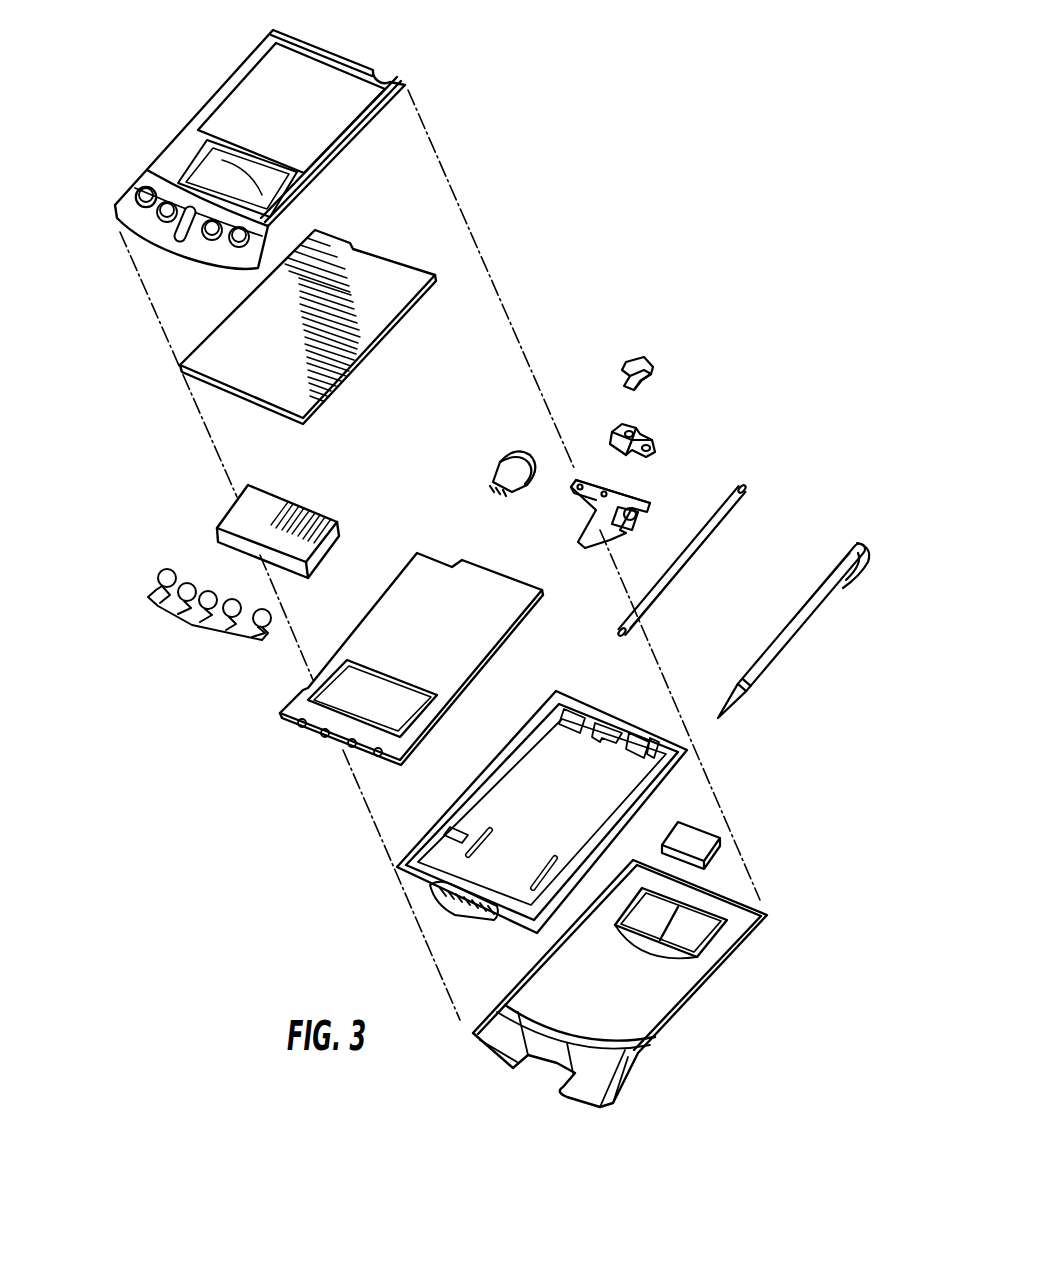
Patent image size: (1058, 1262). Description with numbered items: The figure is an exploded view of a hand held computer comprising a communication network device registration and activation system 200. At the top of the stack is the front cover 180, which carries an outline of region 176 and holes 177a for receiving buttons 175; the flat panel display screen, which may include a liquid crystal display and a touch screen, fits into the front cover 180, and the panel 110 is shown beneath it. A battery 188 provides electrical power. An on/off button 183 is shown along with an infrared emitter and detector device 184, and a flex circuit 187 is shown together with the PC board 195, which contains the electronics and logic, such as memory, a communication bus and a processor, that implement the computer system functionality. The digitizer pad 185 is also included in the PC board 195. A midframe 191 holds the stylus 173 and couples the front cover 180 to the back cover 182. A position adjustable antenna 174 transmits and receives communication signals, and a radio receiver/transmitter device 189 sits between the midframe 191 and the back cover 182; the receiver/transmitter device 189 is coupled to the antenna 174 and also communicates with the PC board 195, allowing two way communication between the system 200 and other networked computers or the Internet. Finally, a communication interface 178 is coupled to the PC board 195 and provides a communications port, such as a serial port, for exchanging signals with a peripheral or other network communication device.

The communication network device registration and activation system 200 is at (682, 97).
The front cover 180 is at (415, 88).
The region 176 is at (210, 177).
The holes 177a is at (149, 196).
The panel / touch overlay 110 is at (415, 262).
The digitizer pad 185 is at (214, 516).
The buttons 175 is at (153, 580).
The PC board 195 is at (297, 688).
The radio receiver/transmitter device 189 is at (508, 450).
The on/off button 183 is at (658, 359).
The infrared emitter and detector device 184 is at (653, 426).
The flex circuit 187 is at (634, 489).
The position adjustable antenna 174 is at (750, 489).
The stylus 173 is at (822, 610).
The midframe 191 is at (653, 811).
The communication interface 178 is at (474, 888).
The battery 188 is at (720, 843).
The back cover 182 is at (691, 1017).